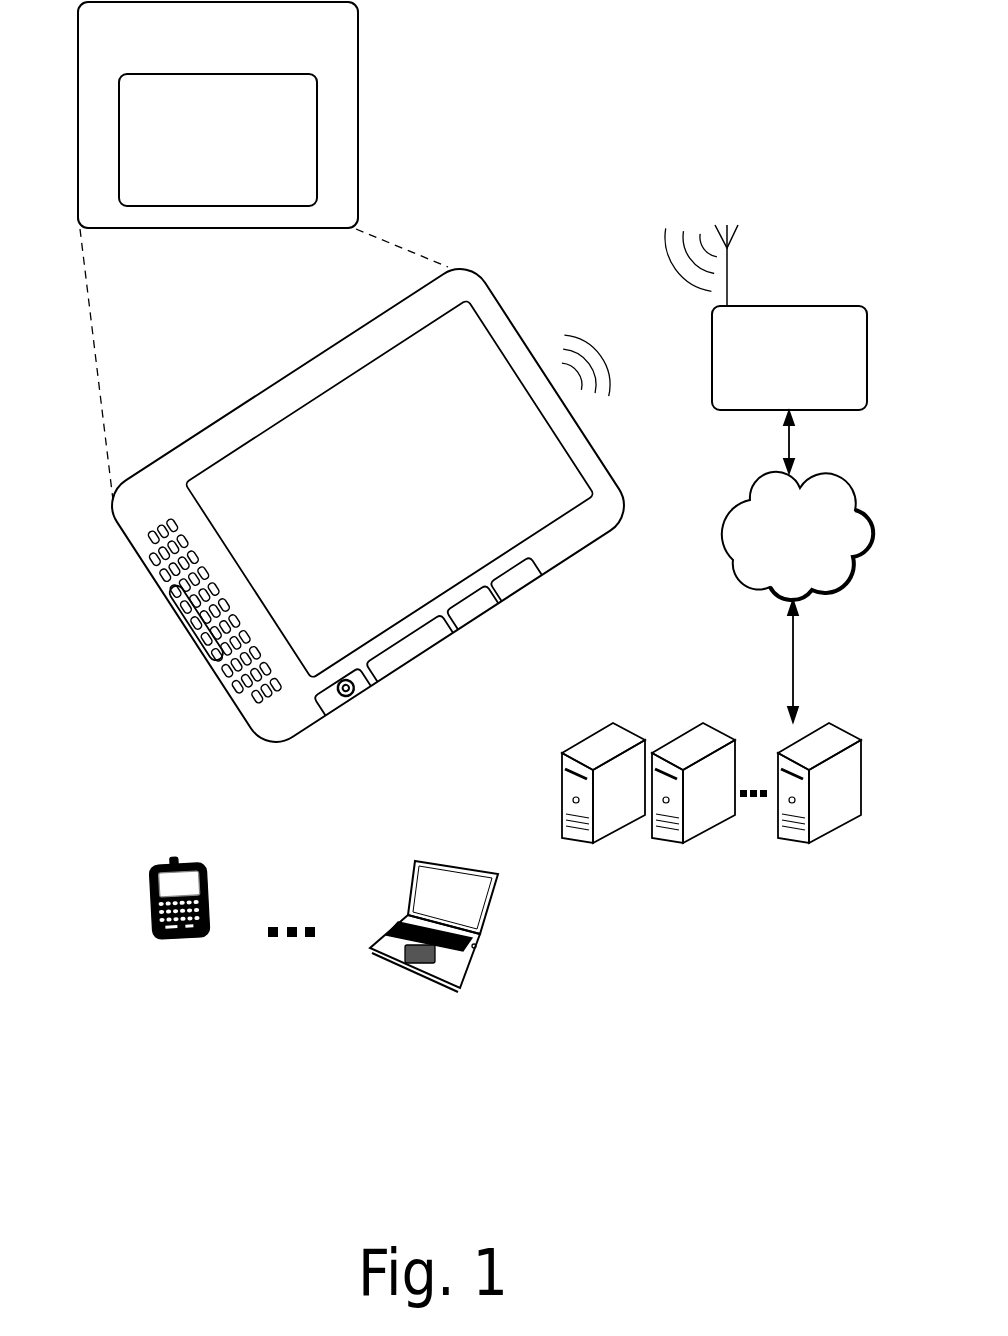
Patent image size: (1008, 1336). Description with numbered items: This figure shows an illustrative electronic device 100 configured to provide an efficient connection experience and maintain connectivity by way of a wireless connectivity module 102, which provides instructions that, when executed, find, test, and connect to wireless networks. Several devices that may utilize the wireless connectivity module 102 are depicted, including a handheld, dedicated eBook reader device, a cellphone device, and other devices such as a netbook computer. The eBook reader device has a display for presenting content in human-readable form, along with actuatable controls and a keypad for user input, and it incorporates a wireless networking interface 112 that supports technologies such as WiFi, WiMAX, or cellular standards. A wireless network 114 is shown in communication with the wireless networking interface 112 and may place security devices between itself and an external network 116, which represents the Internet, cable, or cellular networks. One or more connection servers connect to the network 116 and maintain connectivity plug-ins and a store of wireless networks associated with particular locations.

The electronic device 100 is at (200, 60).
The wireless connectivity module 102 is at (200, 190).
The wireless networking interface 112 is at (621, 389).
The wireless network 114 is at (771, 396).
The network 116 is at (777, 560).